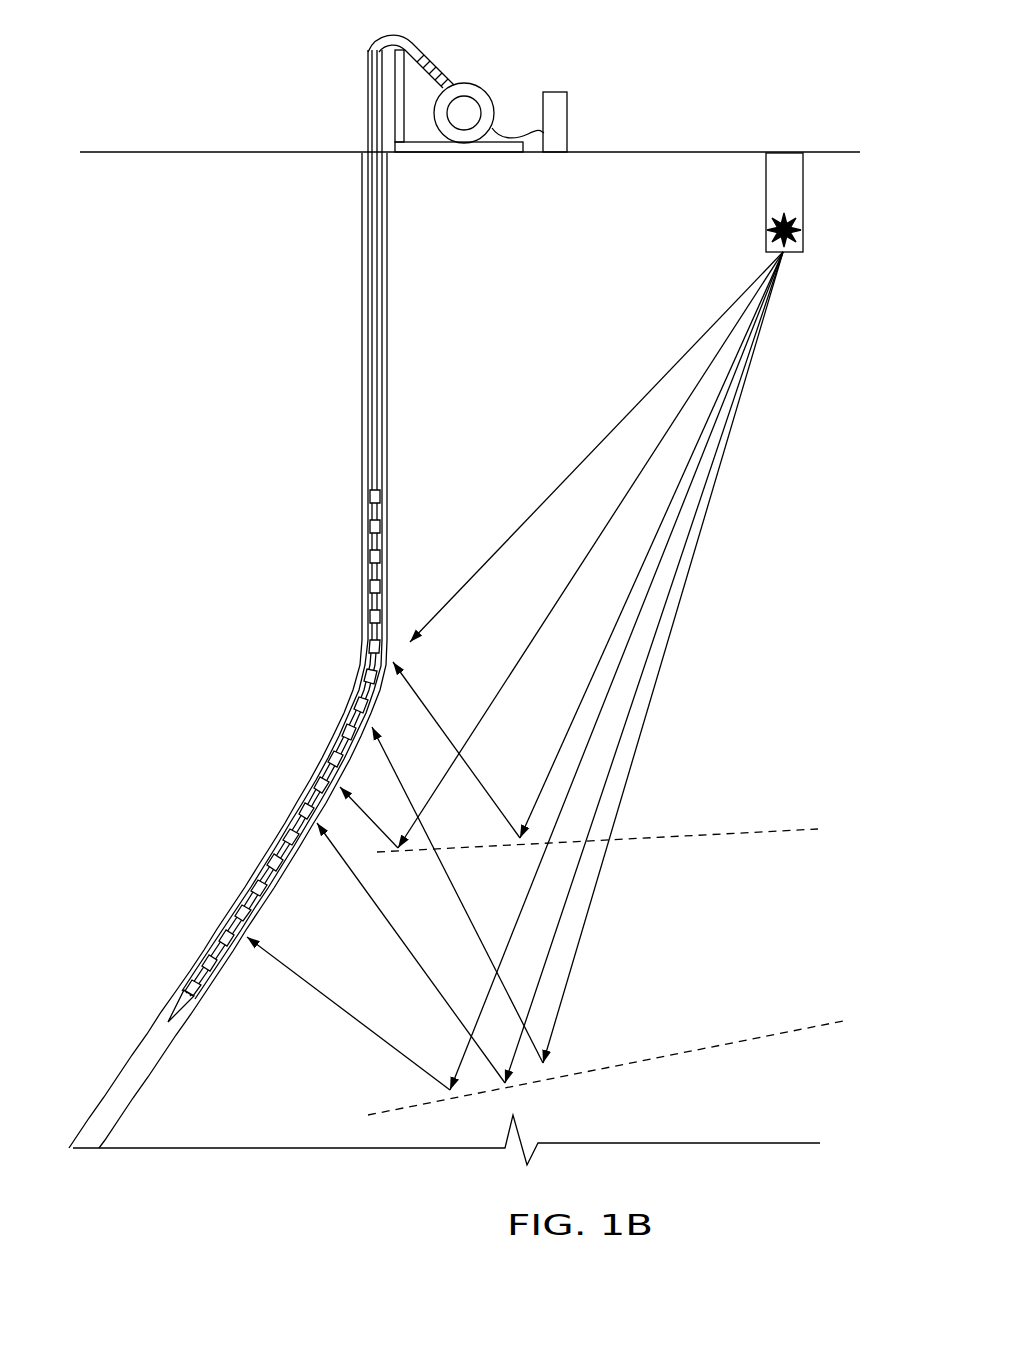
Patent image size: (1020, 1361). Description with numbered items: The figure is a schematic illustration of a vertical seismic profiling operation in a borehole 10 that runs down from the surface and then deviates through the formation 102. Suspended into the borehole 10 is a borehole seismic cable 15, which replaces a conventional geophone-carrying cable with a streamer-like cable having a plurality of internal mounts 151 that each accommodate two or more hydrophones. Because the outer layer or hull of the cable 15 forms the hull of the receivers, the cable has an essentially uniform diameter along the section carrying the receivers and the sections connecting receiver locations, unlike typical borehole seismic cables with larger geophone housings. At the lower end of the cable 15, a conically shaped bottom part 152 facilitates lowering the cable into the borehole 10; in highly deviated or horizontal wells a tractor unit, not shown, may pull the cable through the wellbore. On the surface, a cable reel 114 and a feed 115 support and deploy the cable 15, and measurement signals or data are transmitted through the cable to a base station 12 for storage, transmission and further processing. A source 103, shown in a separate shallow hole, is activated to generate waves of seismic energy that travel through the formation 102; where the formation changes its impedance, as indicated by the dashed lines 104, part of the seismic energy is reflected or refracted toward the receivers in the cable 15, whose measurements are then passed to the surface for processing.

The borehole 10 is at (297, 306).
The base station 12 is at (566, 108).
The borehole seismic cable 15 is at (368, 95).
The formation 102 is at (510, 379).
The source 103 is at (776, 226).
The dashed lines 104 is at (787, 1030).
The cable reel 114 is at (508, 97).
The feed 115 is at (390, 44).
The internal mounts 151 is at (367, 548).
The conically shaped bottom part 152 is at (162, 1018).